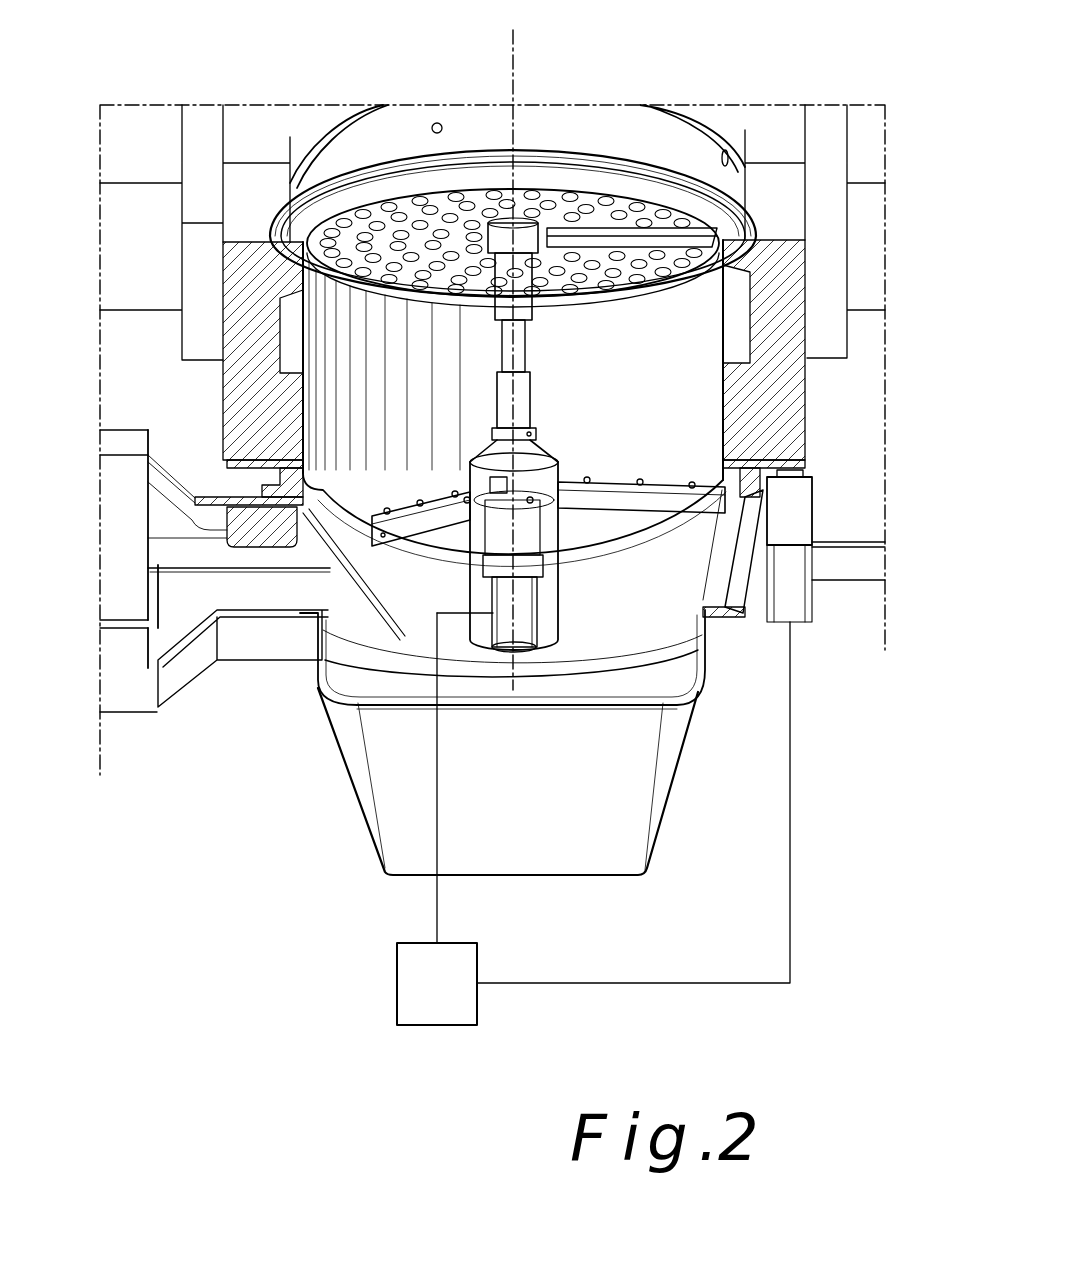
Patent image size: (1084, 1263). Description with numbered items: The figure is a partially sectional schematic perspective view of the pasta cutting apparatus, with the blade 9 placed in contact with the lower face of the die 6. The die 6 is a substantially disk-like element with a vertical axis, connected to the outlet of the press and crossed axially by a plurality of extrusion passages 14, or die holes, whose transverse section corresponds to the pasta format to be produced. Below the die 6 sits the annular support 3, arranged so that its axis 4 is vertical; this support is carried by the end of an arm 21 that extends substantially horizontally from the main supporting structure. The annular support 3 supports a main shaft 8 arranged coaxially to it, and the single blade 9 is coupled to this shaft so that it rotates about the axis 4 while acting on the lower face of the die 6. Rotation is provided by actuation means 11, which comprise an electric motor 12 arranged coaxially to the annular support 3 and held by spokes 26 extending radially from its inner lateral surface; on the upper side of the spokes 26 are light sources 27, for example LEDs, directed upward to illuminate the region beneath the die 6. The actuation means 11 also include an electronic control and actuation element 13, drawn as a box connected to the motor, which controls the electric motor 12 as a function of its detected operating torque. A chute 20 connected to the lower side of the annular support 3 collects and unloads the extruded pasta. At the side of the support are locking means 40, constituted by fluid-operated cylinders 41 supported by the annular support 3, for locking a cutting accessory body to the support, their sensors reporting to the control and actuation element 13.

The annular support 3 is at (740, 615).
The axis 4 is at (513, 72).
The die 6 is at (684, 290).
The main shaft 8 is at (528, 398).
The blade 9 is at (632, 233).
The actuation means 11 is at (554, 628).
The electric motor 12 is at (521, 612).
The control and actuation element 13 is at (425, 985).
The extrusion passages 14 is at (403, 266).
The chute 20 is at (612, 818).
The arm 21 is at (185, 664).
The spokes 26 is at (665, 507).
The light sources 27 is at (692, 483).
The locking means 40 is at (793, 612).
The fluid-operated cylinders 41 is at (826, 602).